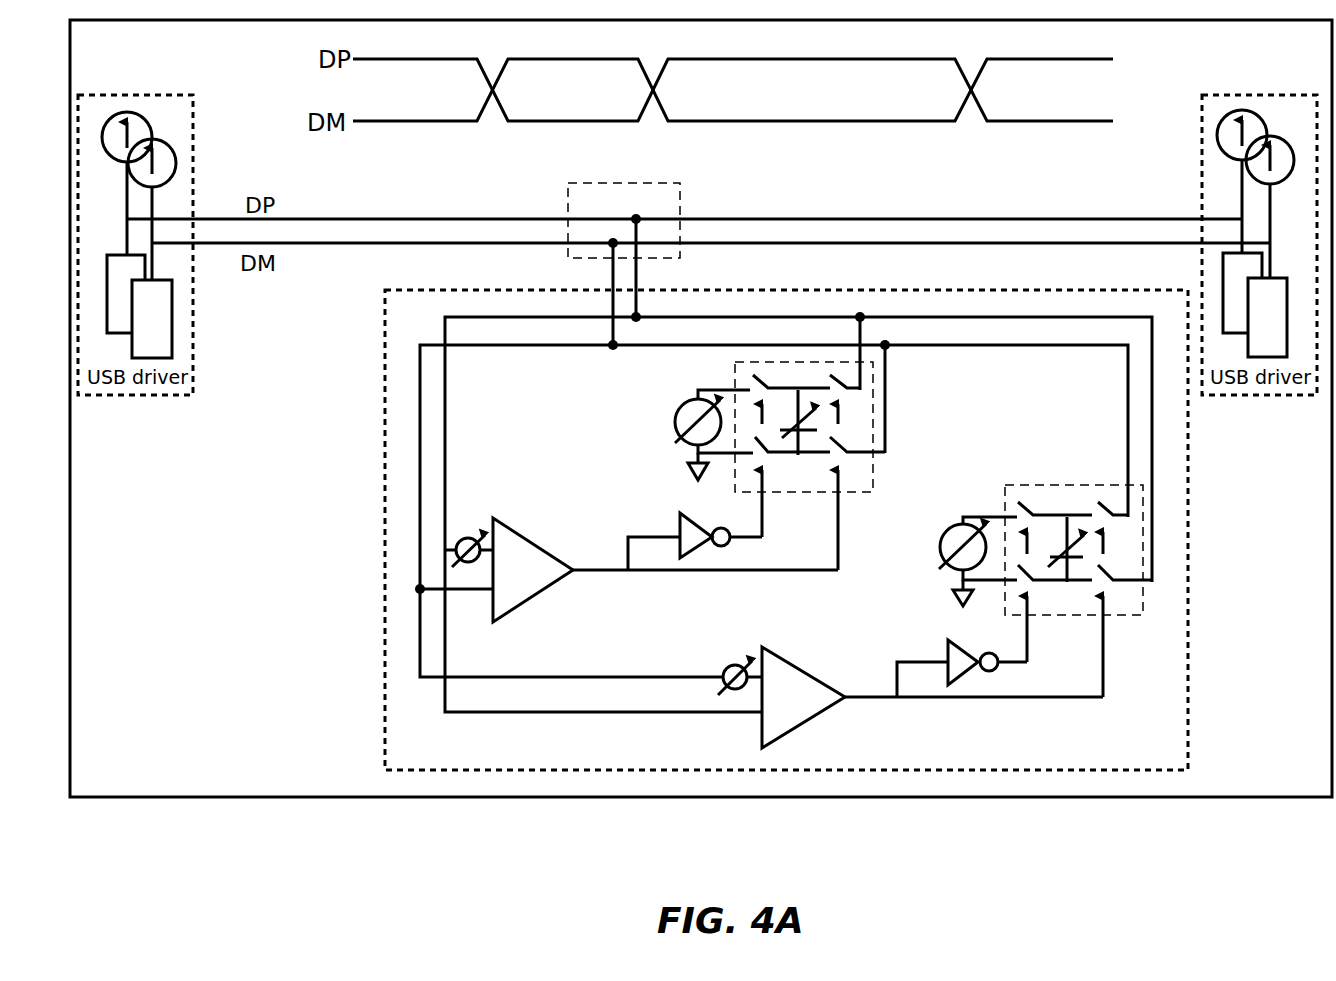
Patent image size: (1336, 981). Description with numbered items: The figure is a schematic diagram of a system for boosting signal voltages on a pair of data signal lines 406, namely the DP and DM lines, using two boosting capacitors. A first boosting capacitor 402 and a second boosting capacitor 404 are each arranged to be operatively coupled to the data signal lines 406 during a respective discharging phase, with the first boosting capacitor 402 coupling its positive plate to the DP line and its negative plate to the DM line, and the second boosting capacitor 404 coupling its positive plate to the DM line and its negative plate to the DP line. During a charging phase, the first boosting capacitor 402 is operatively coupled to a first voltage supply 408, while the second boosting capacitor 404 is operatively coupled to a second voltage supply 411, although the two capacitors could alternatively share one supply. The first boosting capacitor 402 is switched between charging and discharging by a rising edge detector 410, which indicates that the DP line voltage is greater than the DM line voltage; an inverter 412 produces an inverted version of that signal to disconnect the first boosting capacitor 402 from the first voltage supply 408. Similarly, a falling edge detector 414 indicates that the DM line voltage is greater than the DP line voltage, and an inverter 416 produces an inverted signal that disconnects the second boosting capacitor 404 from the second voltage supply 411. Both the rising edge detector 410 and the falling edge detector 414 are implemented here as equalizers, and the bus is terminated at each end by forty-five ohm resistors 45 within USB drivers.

The 45 ohm termination resistor 45 is at (697, 305).
The first boosting capacitor 402 is at (858, 472).
The second boosting capacitor 404 is at (1093, 492).
The data signal lines 406 is at (662, 204).
The first voltage supply 408 is at (676, 424).
The rising edge detector 410 is at (517, 593).
The second voltage supply 411 is at (942, 553).
The inverter 412 is at (683, 518).
The falling edge detector 414 is at (773, 670).
The inverter 416 is at (967, 647).